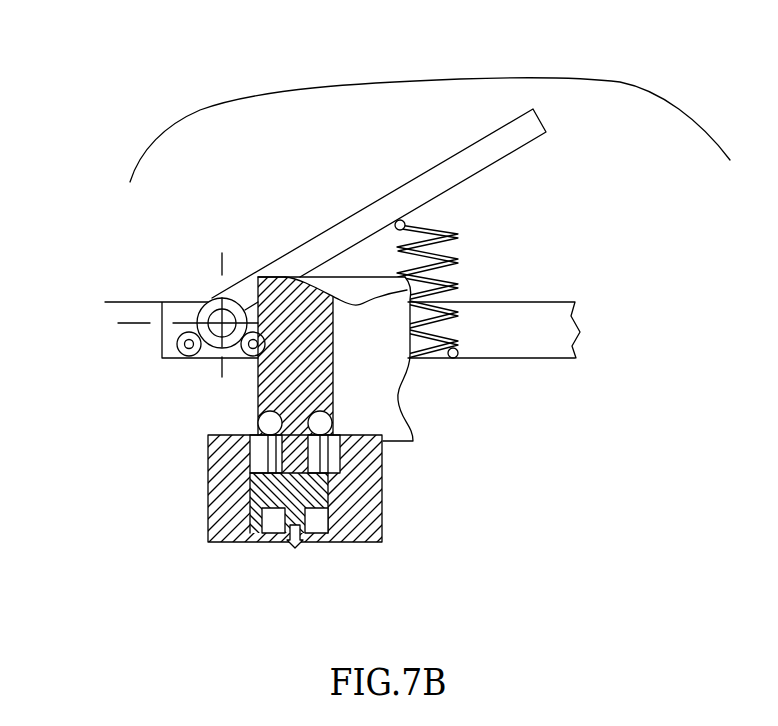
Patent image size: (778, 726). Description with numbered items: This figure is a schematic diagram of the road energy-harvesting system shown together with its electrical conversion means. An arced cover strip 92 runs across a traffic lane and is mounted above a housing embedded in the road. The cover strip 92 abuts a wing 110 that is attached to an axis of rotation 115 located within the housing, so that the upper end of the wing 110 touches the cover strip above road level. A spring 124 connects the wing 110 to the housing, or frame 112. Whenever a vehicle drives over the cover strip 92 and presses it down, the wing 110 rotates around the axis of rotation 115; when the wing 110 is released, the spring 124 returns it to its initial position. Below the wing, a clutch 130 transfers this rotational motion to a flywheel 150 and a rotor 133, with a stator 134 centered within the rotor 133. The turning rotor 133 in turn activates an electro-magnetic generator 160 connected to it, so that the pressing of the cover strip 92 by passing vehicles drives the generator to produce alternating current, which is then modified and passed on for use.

The cover strip 92 is at (242, 100).
The wing 110 is at (401, 184).
The housing, or frame 112 is at (577, 344).
The axis of rotation 115 is at (205, 306).
The spring 124 is at (462, 296).
The clutch 130 is at (257, 458).
The rotor 133 is at (262, 480).
The stator 134 is at (258, 370).
The flywheel 150 is at (383, 500).
The electro-magnetic generator 160 is at (298, 544).